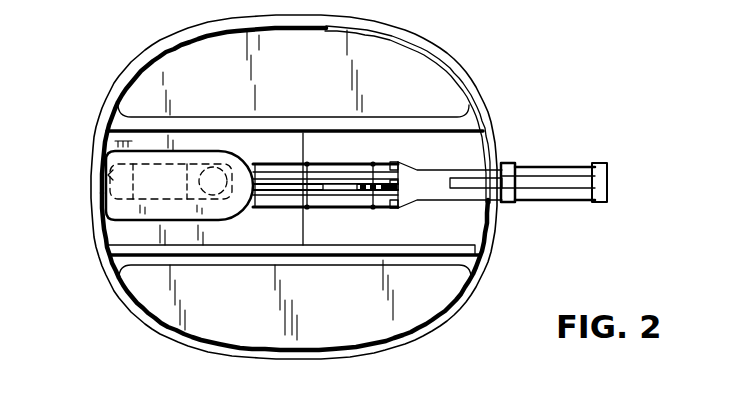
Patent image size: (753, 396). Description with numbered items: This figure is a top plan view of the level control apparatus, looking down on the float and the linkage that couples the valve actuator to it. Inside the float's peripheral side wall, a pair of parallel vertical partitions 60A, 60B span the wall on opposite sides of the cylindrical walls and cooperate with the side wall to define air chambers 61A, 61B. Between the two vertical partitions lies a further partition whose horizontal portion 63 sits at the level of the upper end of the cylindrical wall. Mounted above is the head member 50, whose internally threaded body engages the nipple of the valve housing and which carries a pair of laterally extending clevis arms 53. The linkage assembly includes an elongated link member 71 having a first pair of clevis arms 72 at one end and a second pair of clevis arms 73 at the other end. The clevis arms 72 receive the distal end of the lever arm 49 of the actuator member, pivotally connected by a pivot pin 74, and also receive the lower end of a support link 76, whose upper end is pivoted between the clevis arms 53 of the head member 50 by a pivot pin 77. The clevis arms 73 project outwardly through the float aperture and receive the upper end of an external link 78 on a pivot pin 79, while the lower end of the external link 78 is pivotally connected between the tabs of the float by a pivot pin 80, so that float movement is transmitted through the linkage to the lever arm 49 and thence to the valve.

The lever arm 49 is at (294, 211).
The head member 50 is at (137, 223).
The clevis arms 53 is at (294, 168).
The vertical partition 60A is at (190, 118).
The vertical partition 60B is at (197, 257).
The air chamber 61A is at (410, 68).
The air chamber 61B is at (430, 293).
The horizontal portion 63 is at (101, 133).
The link member 71 is at (456, 207).
The first pair of clevis arms 72 is at (300, 188).
The second pair of clevis arms 73 is at (527, 168).
The pivot pin 74 is at (307, 162).
The support link 76 is at (388, 164).
The pivot pin 77 is at (373, 162).
The external link 78 is at (562, 183).
The pivot pin 79 is at (508, 203).
The pivot pin 80 is at (596, 202).